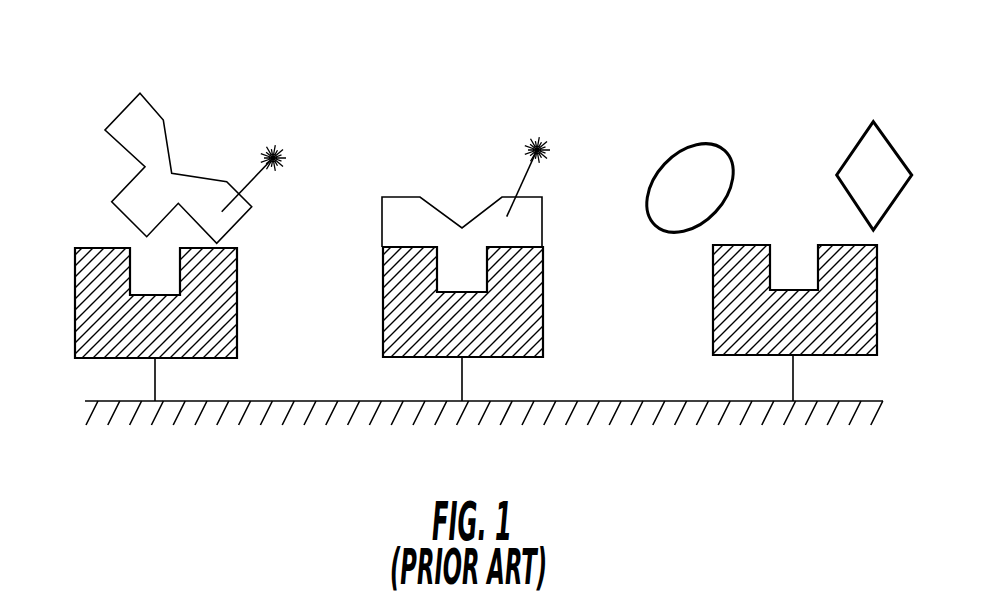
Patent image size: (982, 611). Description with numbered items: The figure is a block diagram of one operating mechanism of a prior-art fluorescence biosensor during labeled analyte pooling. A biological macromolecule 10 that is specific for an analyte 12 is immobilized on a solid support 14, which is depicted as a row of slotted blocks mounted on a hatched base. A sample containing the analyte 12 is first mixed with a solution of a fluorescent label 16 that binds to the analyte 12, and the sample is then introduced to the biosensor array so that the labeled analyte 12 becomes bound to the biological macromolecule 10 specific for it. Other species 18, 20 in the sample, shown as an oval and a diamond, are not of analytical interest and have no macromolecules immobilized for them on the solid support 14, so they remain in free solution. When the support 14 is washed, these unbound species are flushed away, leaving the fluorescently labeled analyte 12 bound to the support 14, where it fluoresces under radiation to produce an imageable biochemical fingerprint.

The biological macromolecule 10 is at (75, 288).
The analyte 12 is at (120, 110).
The solid support 14 is at (136, 418).
The fluorescent label 16 is at (284, 153).
The other species 18 is at (670, 163).
The other species 20 is at (850, 162).